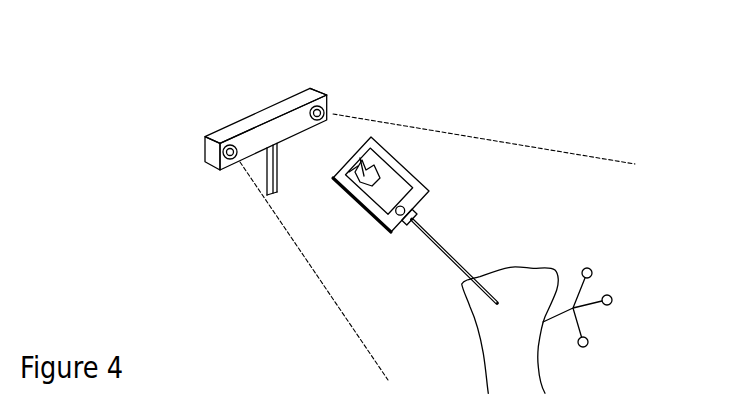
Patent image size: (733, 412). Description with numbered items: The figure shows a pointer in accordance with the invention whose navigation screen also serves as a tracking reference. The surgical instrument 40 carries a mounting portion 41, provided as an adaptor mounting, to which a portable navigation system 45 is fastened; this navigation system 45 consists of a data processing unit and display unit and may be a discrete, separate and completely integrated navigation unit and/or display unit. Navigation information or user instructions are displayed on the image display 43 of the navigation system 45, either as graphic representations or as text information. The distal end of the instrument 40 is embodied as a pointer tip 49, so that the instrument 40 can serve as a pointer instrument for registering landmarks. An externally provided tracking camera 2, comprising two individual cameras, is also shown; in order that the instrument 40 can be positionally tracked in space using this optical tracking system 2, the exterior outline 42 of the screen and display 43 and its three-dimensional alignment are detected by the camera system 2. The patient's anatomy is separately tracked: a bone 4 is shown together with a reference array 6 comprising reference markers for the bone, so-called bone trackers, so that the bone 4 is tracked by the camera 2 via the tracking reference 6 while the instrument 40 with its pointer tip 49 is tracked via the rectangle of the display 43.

The tracking camera 2 is at (282, 102).
The bone 4 is at (538, 281).
The reference array 6 is at (588, 318).
The surgical instrument 40 is at (370, 193).
The mounting portion 41 is at (408, 225).
The exterior outline of the image display 42 is at (408, 193).
The image display 43 is at (378, 171).
The portable navigation system 45 is at (337, 177).
The instrument tip 49 is at (453, 252).